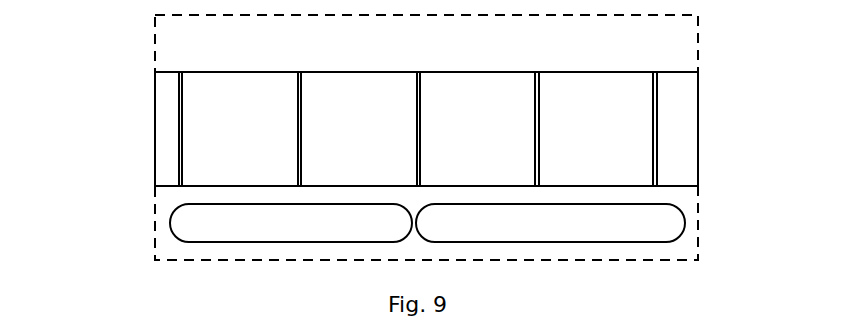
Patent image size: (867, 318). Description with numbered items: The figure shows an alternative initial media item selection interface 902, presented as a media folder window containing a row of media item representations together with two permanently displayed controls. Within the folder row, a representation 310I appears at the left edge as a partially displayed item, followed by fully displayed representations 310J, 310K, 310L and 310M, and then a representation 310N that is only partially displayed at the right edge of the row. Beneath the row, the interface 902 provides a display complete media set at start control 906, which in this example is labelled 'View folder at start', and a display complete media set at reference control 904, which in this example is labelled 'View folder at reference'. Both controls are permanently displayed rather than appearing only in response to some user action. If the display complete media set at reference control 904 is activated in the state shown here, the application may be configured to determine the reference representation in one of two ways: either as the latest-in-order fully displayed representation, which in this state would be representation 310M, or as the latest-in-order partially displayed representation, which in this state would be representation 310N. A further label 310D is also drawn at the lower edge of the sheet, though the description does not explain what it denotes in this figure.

The alternative initial media item selection interface 902 is at (118, 68).
The representation 310I is at (155, 135).
The representation 310J is at (240, 129).
The representation 310K is at (359, 129).
The representation 310L is at (477, 129).
The representation 310M is at (596, 129).
The representation 310N is at (700, 135).
The display complete media set at reference control 904 is at (686, 224).
The display complete media set at start control 906 is at (170, 222).
The media item 310D is at (593, 317).